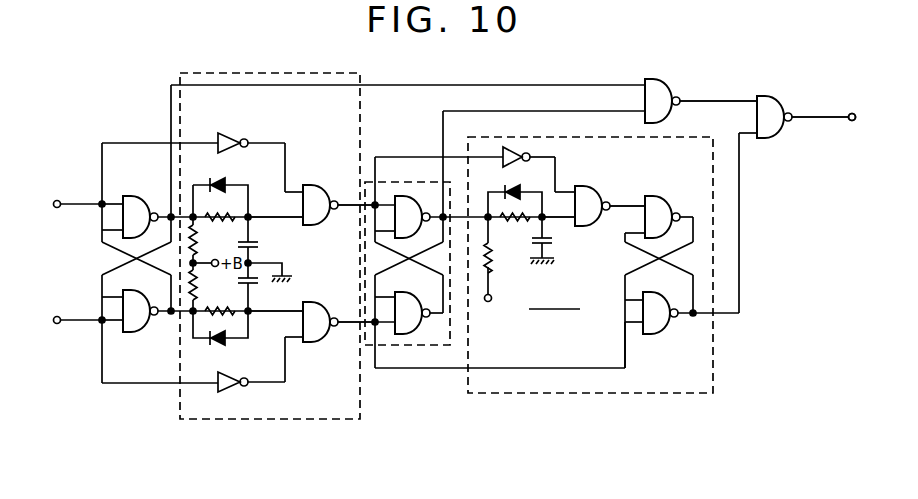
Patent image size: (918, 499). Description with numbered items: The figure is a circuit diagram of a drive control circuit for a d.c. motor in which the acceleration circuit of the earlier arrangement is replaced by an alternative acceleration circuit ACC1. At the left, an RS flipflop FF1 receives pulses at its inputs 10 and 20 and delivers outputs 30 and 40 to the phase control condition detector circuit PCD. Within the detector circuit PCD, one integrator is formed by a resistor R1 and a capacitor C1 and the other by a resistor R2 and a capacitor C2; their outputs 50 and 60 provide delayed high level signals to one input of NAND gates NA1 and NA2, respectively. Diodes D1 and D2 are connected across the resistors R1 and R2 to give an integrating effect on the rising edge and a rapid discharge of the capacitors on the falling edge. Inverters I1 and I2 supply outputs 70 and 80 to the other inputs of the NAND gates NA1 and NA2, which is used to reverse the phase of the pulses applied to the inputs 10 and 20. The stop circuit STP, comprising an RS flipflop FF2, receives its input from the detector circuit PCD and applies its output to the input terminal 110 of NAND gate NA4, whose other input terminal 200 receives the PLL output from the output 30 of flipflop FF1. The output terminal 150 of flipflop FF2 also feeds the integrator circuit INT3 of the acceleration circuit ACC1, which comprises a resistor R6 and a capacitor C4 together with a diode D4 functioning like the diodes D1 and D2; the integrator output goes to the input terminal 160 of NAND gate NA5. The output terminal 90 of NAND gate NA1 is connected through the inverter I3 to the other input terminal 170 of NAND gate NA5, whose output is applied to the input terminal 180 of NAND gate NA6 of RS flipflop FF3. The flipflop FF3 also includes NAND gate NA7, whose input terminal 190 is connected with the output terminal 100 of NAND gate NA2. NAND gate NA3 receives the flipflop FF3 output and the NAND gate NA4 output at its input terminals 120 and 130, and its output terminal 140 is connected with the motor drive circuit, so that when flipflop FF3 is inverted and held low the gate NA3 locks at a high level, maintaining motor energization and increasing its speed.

The input of RS flipflop FF1 10 is at (56, 208).
The input of RS flipflop FF1 20 is at (56, 324).
The output of RS flipflop FF1 30 is at (157, 212).
The output of RS flipflop FF1 40 is at (157, 317).
The output of integrator circuit INT1 50 is at (284, 220).
The output of integrator circuit INT2 60 is at (268, 313).
The output of inverter I1 70 is at (285, 150).
The output of inverter I2 80 is at (286, 374).
The output terminal of NAND gate NA1 90 is at (341, 211).
The output terminal of NAND gate NA2 100 is at (339, 316).
The input terminal of NAND gate NA4 110 is at (567, 112).
The input terminal of NAND gate NA3 120 is at (750, 136).
The input terminal of NAND gate NA3 130 is at (742, 99).
The output terminal of NAND gate NA3 140 is at (852, 121).
The output terminal of RS flipflop FF2 150 is at (430, 204).
The input terminal of NAND gate NA5 160 is at (564, 223).
The input terminal of NAND gate NA5 170 is at (563, 187).
The input terminal of NAND gate NA6 180 is at (635, 203).
The input terminal of NAND gate NA7 190 is at (624, 344).
The input terminal of NAND gate NA4 200 is at (562, 86).
The RS flipflop FF1 is at (127, 190).
The RS flipflop FF2 is at (401, 196).
The RS flipflop FF3 is at (688, 206).
The NAND gate NA1 is at (313, 184).
The NAND gate NA2 is at (310, 343).
The NAND gate NA3 is at (778, 98).
The NAND gate NA4 is at (667, 85).
The NAND gate NA5 is at (584, 186).
The NAND gate NA6 is at (667, 197).
The NAND gate NA7 is at (650, 335).
The inverter I1 is at (228, 135).
The inverter I2 is at (230, 390).
The inverter I3 is at (500, 151).
The diode D1 is at (229, 181).
The diode D2 is at (225, 345).
The diode D4 is at (511, 184).
The resistor R1 is at (237, 213).
The resistor R2 is at (210, 307).
The resistor R6 is at (504, 232).
The capacitor C1 is at (255, 244).
The capacitor C2 is at (255, 282).
The capacitor C4 is at (552, 247).
The phase control condition detector circuit PCD is at (250, 419).
The stop circuit STP is at (422, 345).
The acceleration circuit ACC1 is at (600, 393).
The integrator circuit INT3 is at (554, 300).